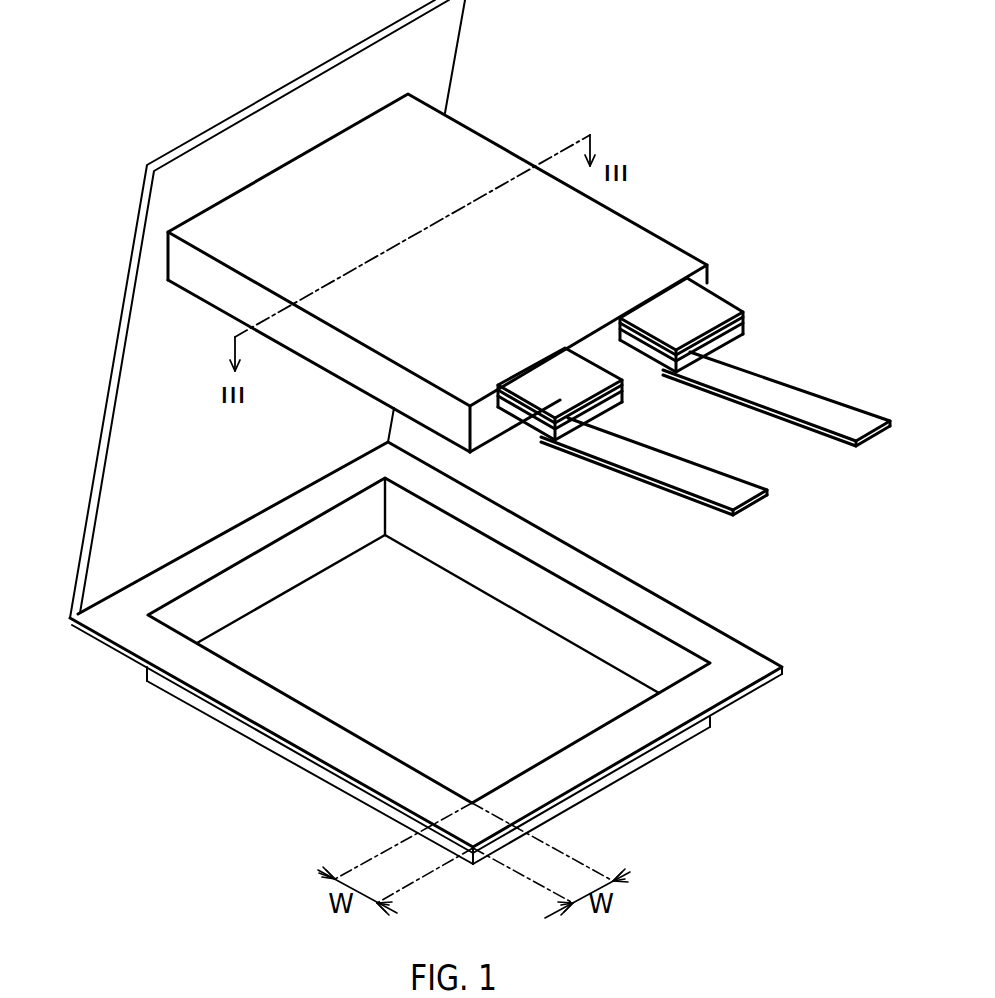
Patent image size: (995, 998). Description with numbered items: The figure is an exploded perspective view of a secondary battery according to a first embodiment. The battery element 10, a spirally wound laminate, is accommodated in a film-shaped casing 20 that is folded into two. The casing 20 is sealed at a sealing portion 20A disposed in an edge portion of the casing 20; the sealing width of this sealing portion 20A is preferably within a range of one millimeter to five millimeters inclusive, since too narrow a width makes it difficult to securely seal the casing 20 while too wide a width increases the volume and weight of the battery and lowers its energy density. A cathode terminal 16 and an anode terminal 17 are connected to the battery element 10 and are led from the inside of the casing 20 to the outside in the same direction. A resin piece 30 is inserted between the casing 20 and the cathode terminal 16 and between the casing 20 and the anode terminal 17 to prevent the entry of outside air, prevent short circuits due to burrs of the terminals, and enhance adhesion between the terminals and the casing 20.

The battery element 10 is at (683, 227).
The cathode terminal 16 is at (668, 442).
The anode terminal 17 is at (792, 373).
The resin piece 30 is at (585, 373).
The casing 20 is at (527, 650).
The sealing portion 20A is at (722, 667).